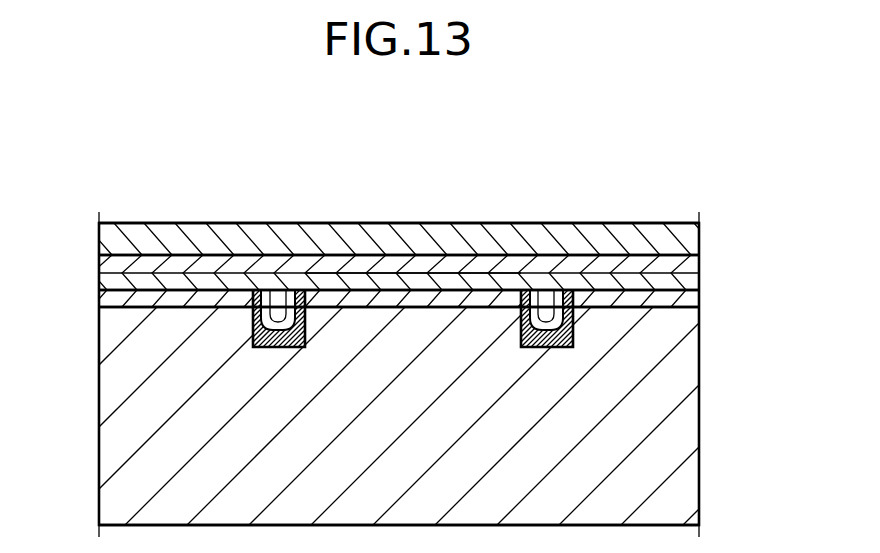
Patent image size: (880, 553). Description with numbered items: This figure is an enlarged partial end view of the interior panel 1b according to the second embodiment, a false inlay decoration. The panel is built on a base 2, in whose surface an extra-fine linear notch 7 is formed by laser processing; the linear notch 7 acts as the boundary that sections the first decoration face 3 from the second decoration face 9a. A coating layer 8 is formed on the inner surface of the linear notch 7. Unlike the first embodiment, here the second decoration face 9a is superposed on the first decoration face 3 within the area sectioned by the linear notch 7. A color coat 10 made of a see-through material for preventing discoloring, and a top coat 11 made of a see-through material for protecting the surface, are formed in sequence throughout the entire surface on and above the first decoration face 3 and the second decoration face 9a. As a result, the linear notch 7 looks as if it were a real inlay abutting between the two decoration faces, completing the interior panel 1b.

The interior panel 1b is at (652, 139).
The base 2 is at (680, 428).
The first decoration face 3 is at (106, 298).
The linear notch 7 is at (255, 312).
The coating layer 8 is at (278, 317).
The second decoration face 9a is at (406, 281).
The color coat 10 is at (104, 273).
The top coat 11 is at (104, 231).